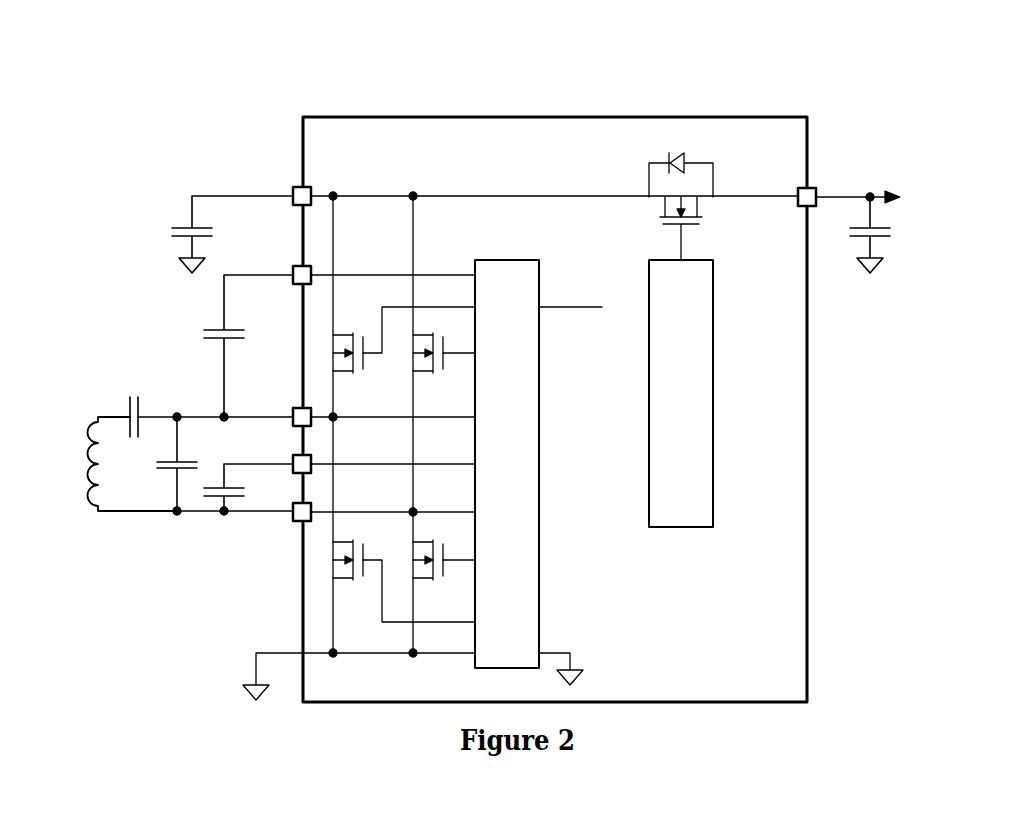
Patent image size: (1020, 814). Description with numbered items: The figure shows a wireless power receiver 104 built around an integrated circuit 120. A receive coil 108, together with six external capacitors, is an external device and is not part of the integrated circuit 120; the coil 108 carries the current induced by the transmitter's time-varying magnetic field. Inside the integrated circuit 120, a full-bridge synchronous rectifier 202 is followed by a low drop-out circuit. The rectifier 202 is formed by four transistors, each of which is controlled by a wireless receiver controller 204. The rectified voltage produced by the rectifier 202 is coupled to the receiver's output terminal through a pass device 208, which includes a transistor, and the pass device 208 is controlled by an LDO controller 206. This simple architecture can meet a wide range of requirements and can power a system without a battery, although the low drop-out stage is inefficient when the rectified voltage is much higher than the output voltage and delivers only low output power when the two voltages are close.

The wireless power receiver 104 is at (227, 75).
The receive coil 108 is at (80, 453).
The integrated circuit 120 is at (348, 114).
The full-bridge synch rectifier 202 is at (388, 447).
The wireless receiver controller 204 is at (537, 568).
The LDO controller 206 is at (662, 512).
The pass device 208 is at (637, 185).